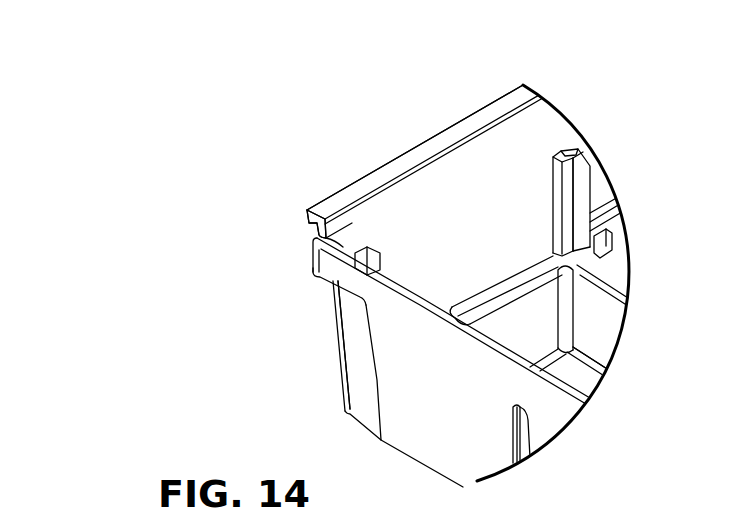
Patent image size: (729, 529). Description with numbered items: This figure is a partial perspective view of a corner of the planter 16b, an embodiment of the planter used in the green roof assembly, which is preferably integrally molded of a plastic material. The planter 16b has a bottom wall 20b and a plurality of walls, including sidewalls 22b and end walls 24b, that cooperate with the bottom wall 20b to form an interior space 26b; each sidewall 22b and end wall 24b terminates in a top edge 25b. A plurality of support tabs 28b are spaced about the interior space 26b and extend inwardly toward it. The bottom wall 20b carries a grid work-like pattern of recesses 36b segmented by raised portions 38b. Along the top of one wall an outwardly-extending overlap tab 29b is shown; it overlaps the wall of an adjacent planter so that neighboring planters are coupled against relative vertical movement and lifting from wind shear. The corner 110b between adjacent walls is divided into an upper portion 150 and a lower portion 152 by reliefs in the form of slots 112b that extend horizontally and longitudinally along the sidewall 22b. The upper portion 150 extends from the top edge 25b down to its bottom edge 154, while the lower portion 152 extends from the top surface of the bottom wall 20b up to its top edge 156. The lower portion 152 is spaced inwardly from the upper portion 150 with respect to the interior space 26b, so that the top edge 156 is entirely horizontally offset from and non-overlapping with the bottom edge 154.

The planter 16b is at (258, 186).
The sidewall 22b is at (493, 158).
The overlap tab 29b is at (434, 141).
The interior space 26b is at (532, 180).
The support tab 28b is at (578, 220).
The raised portion 38b is at (603, 266).
The recess 36b is at (573, 372).
The bottom wall 20b is at (502, 285).
The top edge 25b is at (390, 280).
The upper portion 150 is at (322, 252).
The bottom edge 154 is at (327, 280).
The slot 112b is at (343, 258).
The top edge 156 is at (362, 250).
The corner 110b is at (340, 339).
The lower portion 152 is at (352, 367).
The end wall 24b is at (415, 393).